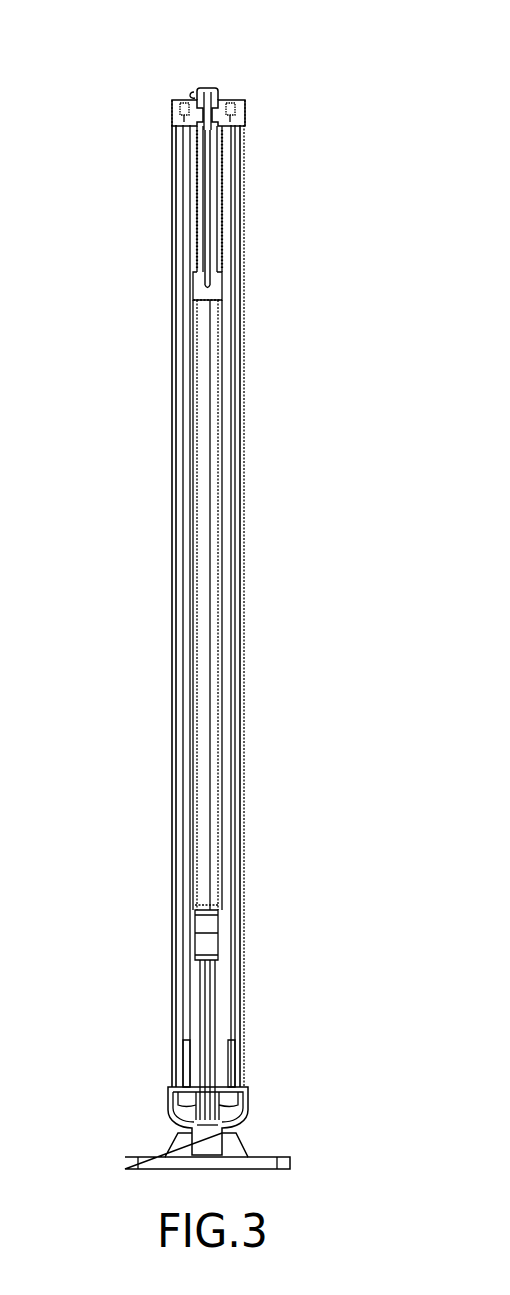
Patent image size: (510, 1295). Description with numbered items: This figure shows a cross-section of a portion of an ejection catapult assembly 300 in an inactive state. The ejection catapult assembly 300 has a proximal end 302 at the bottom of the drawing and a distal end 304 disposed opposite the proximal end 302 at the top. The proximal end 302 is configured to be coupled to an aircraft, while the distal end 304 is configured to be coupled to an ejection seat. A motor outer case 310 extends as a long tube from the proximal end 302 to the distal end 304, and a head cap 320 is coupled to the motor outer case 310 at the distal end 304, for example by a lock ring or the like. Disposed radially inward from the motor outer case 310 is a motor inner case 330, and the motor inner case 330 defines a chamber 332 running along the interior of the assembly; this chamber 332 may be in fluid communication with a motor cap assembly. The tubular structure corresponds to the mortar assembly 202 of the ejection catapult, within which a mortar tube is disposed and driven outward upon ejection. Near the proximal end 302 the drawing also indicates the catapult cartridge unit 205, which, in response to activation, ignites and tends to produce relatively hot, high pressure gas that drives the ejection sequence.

The ejection catapult assembly 300 is at (278, 76).
The head cap 320 is at (176, 115).
The distal end 304 is at (176, 133).
The motor outer case 310 is at (173, 203).
The mortar assembly 202 is at (172, 280).
The motor inner case 330 is at (194, 345).
The chamber 332 is at (208, 408).
The catapult cartridge unit 205 is at (207, 1052).
The proximal end 302 is at (245, 1152).